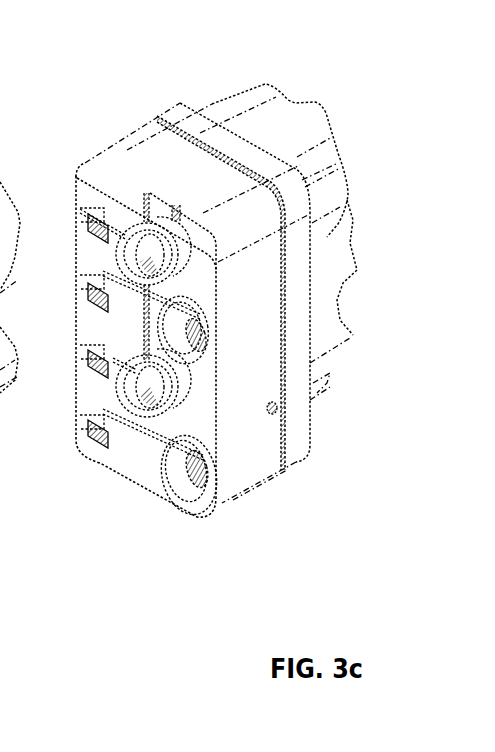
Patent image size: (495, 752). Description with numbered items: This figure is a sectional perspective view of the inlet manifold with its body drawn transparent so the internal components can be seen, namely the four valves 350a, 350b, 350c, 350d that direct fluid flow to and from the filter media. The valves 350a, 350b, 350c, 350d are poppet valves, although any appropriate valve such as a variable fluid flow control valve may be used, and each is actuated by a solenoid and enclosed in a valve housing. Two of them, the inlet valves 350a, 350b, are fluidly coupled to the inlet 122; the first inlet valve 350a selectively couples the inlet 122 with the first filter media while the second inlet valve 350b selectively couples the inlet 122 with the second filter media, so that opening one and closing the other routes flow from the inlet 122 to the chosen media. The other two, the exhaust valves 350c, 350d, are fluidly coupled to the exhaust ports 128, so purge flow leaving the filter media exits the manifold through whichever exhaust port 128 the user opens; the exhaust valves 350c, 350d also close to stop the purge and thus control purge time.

The first inlet valve 350a is at (140, 243).
The second inlet valve 350b is at (145, 408).
The first exhaust valve 350c is at (205, 338).
The second exhaust valve 350d is at (213, 488).
The exhaust port 128 is at (278, 407).
The inlet 122 is at (160, 450).